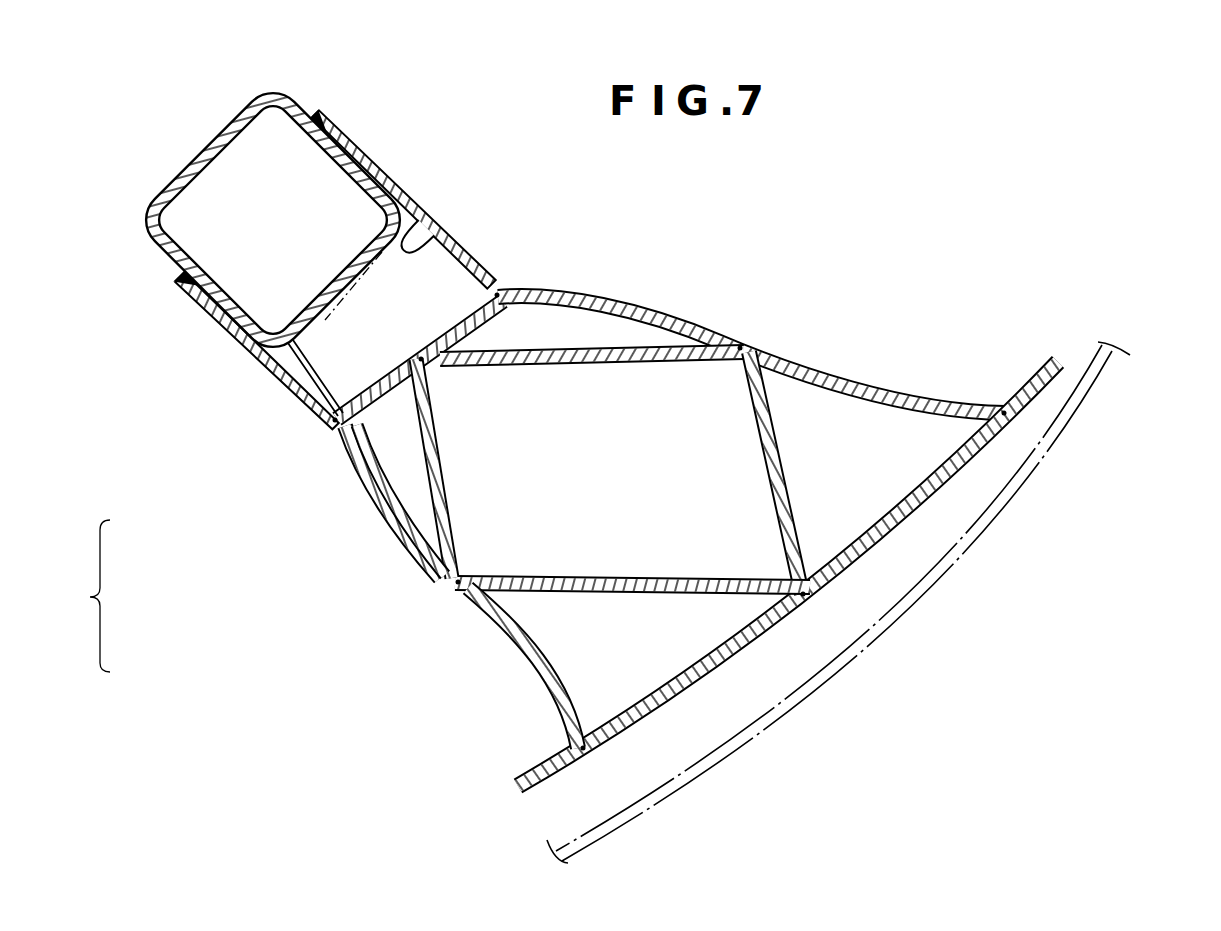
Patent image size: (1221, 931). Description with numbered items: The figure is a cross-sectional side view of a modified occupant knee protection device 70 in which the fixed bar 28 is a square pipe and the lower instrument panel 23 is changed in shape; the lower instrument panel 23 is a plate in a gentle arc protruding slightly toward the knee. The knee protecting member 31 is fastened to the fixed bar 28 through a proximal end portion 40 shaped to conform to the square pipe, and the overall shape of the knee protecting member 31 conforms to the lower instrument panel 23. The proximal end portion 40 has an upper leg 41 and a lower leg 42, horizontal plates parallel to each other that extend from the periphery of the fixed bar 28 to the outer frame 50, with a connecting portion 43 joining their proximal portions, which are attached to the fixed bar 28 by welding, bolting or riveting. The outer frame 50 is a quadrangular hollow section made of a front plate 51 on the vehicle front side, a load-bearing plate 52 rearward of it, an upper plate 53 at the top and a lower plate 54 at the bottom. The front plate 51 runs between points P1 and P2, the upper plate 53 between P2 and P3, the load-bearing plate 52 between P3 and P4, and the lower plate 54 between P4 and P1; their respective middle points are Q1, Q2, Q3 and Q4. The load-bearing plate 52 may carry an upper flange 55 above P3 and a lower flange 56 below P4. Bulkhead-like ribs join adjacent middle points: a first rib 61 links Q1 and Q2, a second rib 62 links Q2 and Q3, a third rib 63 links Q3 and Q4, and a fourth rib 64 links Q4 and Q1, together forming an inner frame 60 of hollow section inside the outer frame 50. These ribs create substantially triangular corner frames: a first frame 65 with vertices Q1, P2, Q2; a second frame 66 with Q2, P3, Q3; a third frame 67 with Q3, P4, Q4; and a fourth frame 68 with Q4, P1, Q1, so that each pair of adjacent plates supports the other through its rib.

The lower instrument panel 23 is at (1097, 392).
The fixed bar 28 is at (192, 160).
The knee protecting member 31 is at (80, 596).
The proximal end portion 40 is at (268, 400).
The upper leg 41 is at (373, 160).
The lower leg 42 is at (220, 330).
The connecting portion 43 is at (415, 240).
The outer frame 50 is at (357, 500).
The front plate 51 is at (455, 318).
The load-bearing plate 52 is at (897, 527).
The upper plate 53 is at (607, 290).
The lower plate 54 is at (529, 663).
The upper flange 55 is at (1097, 393).
The lower flange 56 is at (543, 773).
The inner frame 60 is at (405, 528).
The first rib 61 is at (590, 360).
The second rib 62 is at (767, 453).
The third rib 63 is at (620, 578).
The fourth rib 64 is at (443, 477).
The first frame 65 is at (628, 333).
The second frame 66 is at (871, 410).
The third frame 67 is at (690, 668).
The fourth frame 68 is at (393, 443).
The occupant knee protection device 70 is at (1043, 193).
The point P1 is at (335, 421).
The point P2 is at (497, 293).
The point P3 is at (1003, 412).
The point P4 is at (590, 755).
The middle point Q1 is at (420, 358).
The middle point Q2 is at (740, 347).
The middle point Q3 is at (804, 595).
The middle point Q4 is at (458, 583).